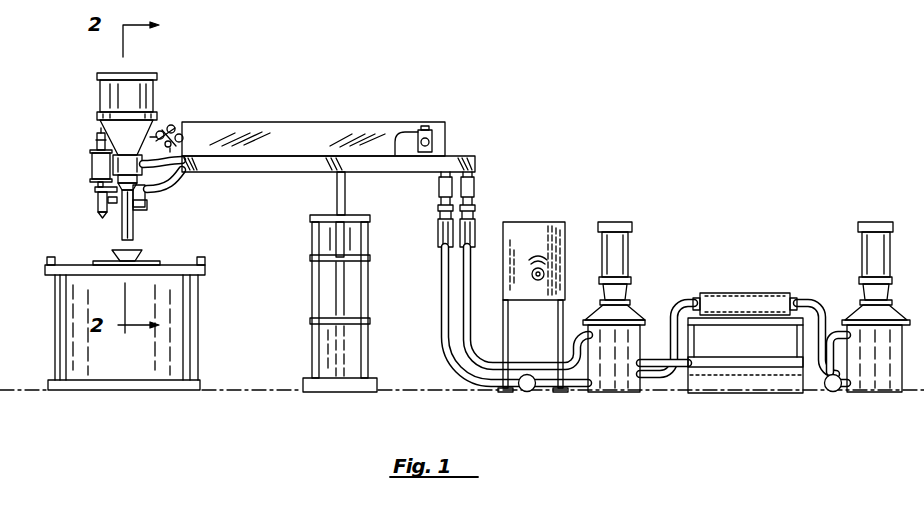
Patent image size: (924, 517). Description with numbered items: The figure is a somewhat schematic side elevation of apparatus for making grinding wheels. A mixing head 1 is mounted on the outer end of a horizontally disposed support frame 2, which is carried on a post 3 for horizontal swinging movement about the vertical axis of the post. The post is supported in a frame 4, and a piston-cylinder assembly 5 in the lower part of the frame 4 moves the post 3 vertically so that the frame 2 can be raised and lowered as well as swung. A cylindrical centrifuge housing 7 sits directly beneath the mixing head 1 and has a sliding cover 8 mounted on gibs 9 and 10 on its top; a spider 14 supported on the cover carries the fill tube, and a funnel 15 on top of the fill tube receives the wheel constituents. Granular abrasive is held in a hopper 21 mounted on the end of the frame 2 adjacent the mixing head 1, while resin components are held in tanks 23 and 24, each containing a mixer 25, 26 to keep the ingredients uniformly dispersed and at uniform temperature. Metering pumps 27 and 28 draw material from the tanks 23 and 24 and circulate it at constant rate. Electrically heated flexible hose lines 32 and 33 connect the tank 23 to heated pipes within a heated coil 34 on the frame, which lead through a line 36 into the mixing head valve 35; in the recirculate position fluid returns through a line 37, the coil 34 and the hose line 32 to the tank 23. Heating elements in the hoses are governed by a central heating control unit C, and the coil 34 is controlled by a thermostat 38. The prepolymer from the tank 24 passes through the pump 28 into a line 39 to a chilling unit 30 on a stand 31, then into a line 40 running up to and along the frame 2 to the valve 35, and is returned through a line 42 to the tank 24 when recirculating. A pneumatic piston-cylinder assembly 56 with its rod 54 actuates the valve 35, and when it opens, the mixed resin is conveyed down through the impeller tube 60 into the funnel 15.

The mixing head 1 is at (78, 181).
The support frame 2 is at (288, 122).
The post 3 is at (345, 198).
The frame 4 is at (370, 287).
The piston-cylinder assembly 5 is at (356, 356).
The centrifuge housing 7 is at (198, 335).
The sliding cover 8 is at (195, 262).
The gib 9 is at (47, 260).
The gib 10 is at (205, 264).
The spider 14 is at (150, 262).
The funnel 15 is at (115, 252).
The hopper 21 is at (100, 97).
The tank 23 is at (618, 390).
The tank 24 is at (873, 390).
The mixer 25 is at (630, 256).
The mixer 26 is at (865, 252).
The metering pump 27 is at (526, 392).
The metering pump 28 is at (833, 392).
The chilling unit 30 is at (741, 294).
The stand 31 is at (695, 358).
The flexible hose line 32 is at (443, 293).
The flexible hose line 33 is at (465, 315).
The heated coil 34 is at (292, 170).
The mixing head valve 35 is at (145, 203).
The line 36 is at (165, 175).
The line 37 is at (168, 190).
The thermostat 38 is at (442, 128).
The line 39 is at (820, 305).
The line 40 is at (677, 303).
The line 42 is at (515, 364).
The rod 54 is at (97, 200).
The pneumatic piston-cylinder assembly 56 is at (92, 161).
The impeller tube 60 is at (121, 229).
The central heating control unit C is at (551, 218).